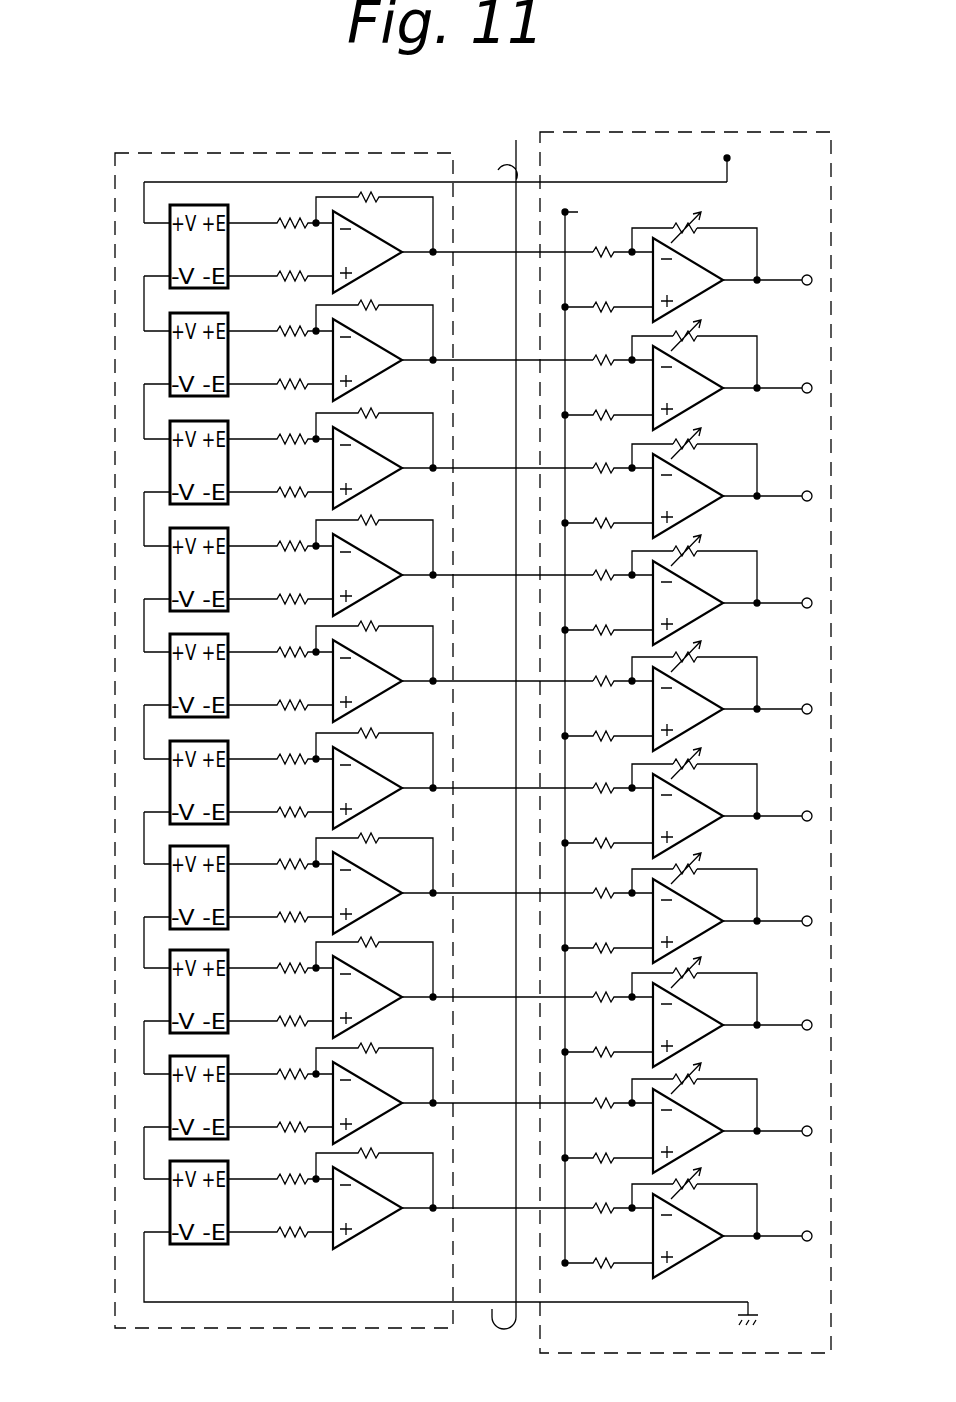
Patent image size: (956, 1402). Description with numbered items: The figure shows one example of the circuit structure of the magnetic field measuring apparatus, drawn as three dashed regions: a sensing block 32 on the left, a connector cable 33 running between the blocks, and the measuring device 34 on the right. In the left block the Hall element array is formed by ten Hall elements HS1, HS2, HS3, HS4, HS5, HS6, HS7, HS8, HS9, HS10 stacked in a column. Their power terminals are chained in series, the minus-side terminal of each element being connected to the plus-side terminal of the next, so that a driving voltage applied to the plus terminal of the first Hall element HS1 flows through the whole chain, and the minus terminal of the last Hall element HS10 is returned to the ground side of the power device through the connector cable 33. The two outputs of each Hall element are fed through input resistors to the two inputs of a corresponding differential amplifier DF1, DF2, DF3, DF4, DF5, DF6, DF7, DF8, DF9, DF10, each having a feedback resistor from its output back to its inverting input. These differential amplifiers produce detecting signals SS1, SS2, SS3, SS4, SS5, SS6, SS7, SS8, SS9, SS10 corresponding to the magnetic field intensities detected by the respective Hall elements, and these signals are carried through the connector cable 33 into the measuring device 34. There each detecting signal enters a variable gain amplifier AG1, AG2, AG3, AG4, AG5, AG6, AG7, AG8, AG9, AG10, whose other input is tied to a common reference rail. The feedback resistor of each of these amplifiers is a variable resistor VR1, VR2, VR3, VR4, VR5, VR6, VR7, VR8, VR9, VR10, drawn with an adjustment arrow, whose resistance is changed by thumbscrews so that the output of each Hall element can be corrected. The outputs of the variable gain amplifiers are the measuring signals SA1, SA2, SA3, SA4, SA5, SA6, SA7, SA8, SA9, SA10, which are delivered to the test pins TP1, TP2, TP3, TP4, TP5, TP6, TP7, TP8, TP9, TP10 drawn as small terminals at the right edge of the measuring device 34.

The differential amplifier section 32 is at (312, 154).
The connector cable 33 is at (516, 148).
The measuring device 34 is at (691, 137).
The Hall element HS1 is at (170, 263).
The Hall element HS2 is at (170, 371).
The Hall element HS3 is at (170, 479).
The Hall element HS4 is at (170, 586).
The Hall element HS5 is at (170, 692).
The Hall element HS6 is at (170, 799).
The Hall element HS7 is at (170, 904).
The Hall element HS8 is at (170, 1008).
The Hall element HS9 is at (170, 1114).
The Hall element HS10 is at (170, 1219).
The differential amplifier DF1 is at (393, 262).
The differential amplifier DF2 is at (393, 370).
The differential amplifier DF3 is at (393, 478).
The differential amplifier DF4 is at (393, 585).
The differential amplifier DF5 is at (393, 691).
The differential amplifier DF6 is at (393, 798).
The differential amplifier DF7 is at (393, 903).
The differential amplifier DF8 is at (393, 1007).
The differential amplifier DF9 is at (393, 1113).
The differential amplifier DF10 is at (393, 1218).
The detecting signal SS1 is at (486, 256).
The detecting signal SS2 is at (486, 364).
The detecting signal SS3 is at (486, 472).
The detecting signal SS4 is at (486, 579).
The detecting signal SS5 is at (486, 685).
The detecting signal SS6 is at (486, 792).
The detecting signal SS7 is at (486, 897).
The detecting signal SS8 is at (486, 1001).
The detecting signal SS9 is at (486, 1107).
The detecting signal SS10 is at (486, 1212).
The variable gain amplifier AG1 is at (697, 294).
The variable gain amplifier AG2 is at (697, 402).
The variable gain amplifier AG3 is at (697, 510).
The variable gain amplifier AG4 is at (697, 617).
The variable gain amplifier AG5 is at (697, 723).
The variable gain amplifier AG6 is at (697, 830).
The variable gain amplifier AG7 is at (697, 935).
The variable gain amplifier AG8 is at (697, 1039).
The variable gain amplifier AG9 is at (697, 1145).
The variable gain amplifier AG10 is at (697, 1250).
The variable resistor VR1 is at (705, 239).
The variable resistor VR2 is at (705, 347).
The variable resistor VR3 is at (705, 455).
The variable resistor VR4 is at (705, 562).
The variable resistor VR5 is at (705, 668).
The variable resistor VR6 is at (705, 775).
The variable resistor VR7 is at (705, 880).
The variable resistor VR8 is at (705, 984).
The variable resistor VR9 is at (705, 1090).
The variable resistor VR10 is at (712, 1195).
The test pin TP1 is at (812, 263).
The test pin TP2 is at (812, 371).
The test pin TP3 is at (812, 479).
The test pin TP4 is at (812, 586).
The test pin TP5 is at (812, 692).
The test pin TP6 is at (812, 799).
The test pin TP7 is at (812, 904).
The test pin TP8 is at (812, 1008).
The test pin TP9 is at (812, 1114).
The test pin TP10 is at (812, 1219).
The measuring signal SA1 is at (789, 283).
The measuring signal SA2 is at (789, 391).
The measuring signal SA3 is at (789, 499).
The measuring signal SA4 is at (789, 606).
The measuring signal SA5 is at (789, 712).
The measuring signal SA6 is at (789, 819).
The measuring signal SA7 is at (789, 924).
The measuring signal SA8 is at (789, 1028).
The measuring signal SA9 is at (789, 1134).
The measuring signal SA10 is at (789, 1239).